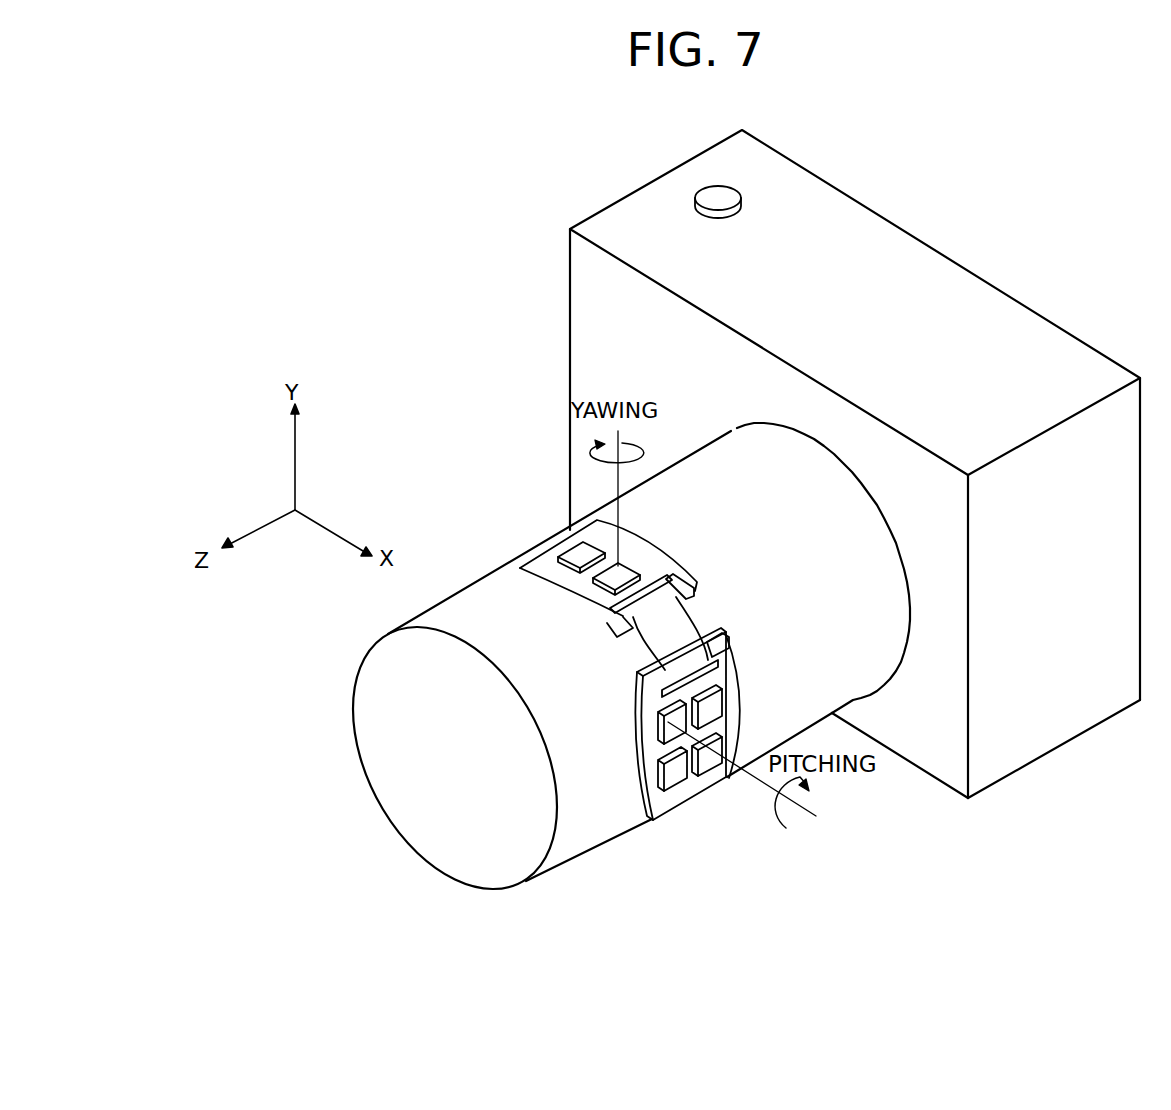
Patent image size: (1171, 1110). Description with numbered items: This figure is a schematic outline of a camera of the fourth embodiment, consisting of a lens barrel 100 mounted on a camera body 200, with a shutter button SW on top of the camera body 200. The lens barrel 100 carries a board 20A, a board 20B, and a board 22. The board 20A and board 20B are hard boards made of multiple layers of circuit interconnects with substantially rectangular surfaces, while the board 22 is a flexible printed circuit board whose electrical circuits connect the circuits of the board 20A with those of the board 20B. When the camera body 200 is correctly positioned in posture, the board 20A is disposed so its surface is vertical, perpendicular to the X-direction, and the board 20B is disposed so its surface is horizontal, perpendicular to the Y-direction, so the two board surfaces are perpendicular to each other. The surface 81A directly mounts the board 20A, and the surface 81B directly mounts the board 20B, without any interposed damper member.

The camera body 200 is at (944, 782).
The shutter button SW is at (727, 204).
The lens barrel 100 is at (612, 832).
The board 20B is at (540, 566).
The board 20A is at (692, 788).
The board 22 is at (666, 638).
The surface 81A is at (703, 642).
The surface 81B is at (700, 594).